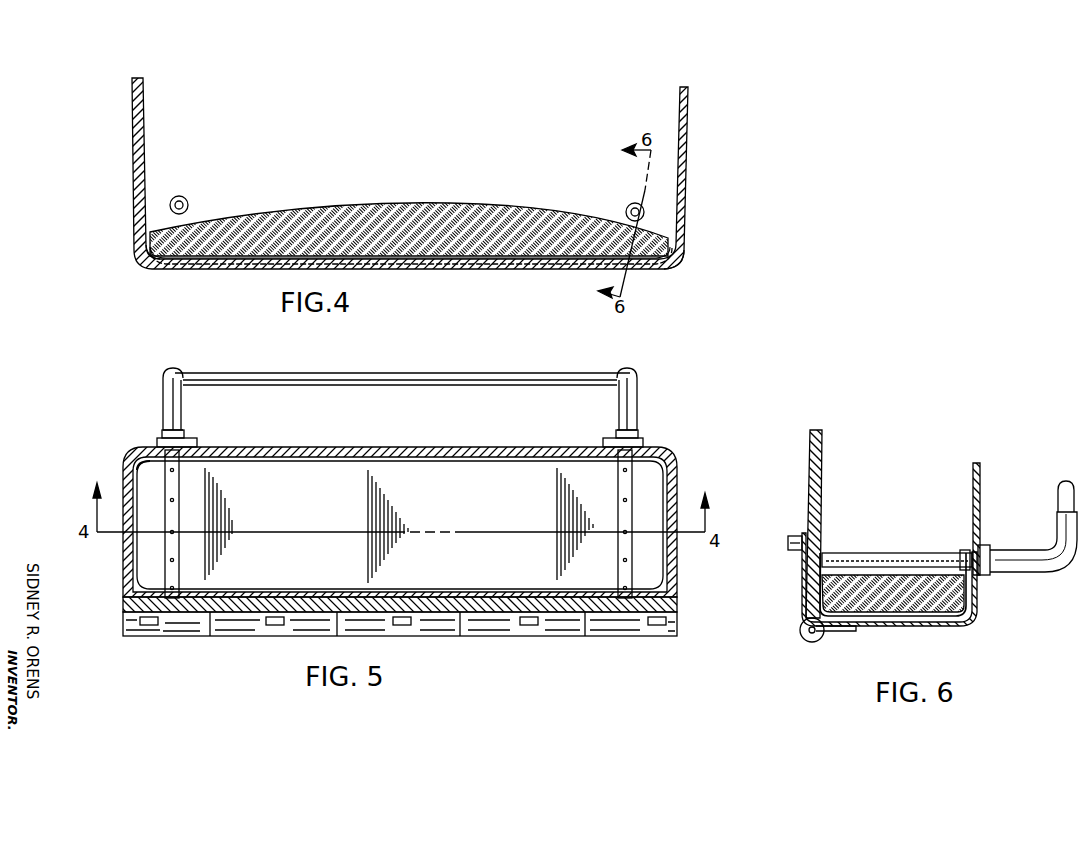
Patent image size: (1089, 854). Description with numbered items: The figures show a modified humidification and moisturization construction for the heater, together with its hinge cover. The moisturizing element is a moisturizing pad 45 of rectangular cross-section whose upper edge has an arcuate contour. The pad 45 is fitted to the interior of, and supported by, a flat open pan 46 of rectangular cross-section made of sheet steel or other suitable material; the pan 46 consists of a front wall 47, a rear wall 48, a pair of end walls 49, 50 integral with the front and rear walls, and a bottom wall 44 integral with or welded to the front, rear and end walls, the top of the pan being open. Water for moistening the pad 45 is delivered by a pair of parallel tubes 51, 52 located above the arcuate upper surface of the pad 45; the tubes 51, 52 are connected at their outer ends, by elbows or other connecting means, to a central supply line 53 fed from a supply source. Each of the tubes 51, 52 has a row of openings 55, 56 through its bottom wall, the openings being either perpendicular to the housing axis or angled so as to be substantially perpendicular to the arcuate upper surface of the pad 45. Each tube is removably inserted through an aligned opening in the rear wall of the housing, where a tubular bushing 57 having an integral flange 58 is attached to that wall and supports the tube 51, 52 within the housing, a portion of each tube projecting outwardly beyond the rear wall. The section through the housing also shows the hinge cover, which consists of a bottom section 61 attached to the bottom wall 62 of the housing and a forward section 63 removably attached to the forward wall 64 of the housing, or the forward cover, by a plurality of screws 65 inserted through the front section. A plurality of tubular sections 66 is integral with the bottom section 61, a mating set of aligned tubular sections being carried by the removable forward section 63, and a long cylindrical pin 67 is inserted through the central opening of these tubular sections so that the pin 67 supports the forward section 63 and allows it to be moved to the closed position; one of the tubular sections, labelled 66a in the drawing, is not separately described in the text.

In FIG. 4, the bottom wall 44 is at (458, 263).
In FIG. 4, the moisturizing pad 45 is at (532, 202).
In FIG. 4, the flat open pan 46 is at (690, 222).
In FIG. 5, the front wall 47 is at (248, 598).
In FIG. 5, the rear wall 48 is at (333, 456).
In FIG. 4, the end wall 49 is at (138, 247).
In FIG. 4, the end wall 50 is at (688, 256).
In FIG. 4, the tube 51 is at (184, 196).
In FIG. 5, the tube 51 is at (180, 472).
In FIG. 4, the tube 52 is at (628, 205).
In FIG. 5, the tube 52 is at (620, 518).
In FIG. 5, the central supply line 53 is at (400, 378).
In FIG. 5, the openings 55 is at (170, 580).
In FIG. 5, the openings 56 is at (632, 558).
In FIG. 6, the tubular bushing 57 is at (985, 548).
In FIG. 6, the flange 58 is at (982, 545).
In FIG. 6, the bottom section 61 is at (836, 630).
In FIG. 6, the bottom wall 62 is at (918, 618).
In FIG. 6, the forward section 63 is at (800, 582).
In FIG. 6, the forward wall 64 is at (810, 480).
In FIG. 6, the screws 65 is at (793, 534).
In FIG. 5, the tubular sections 66 is at (398, 654).
In FIG. 5, the slot 66a is at (236, 632).
In FIG. 5, the cylindrical pin 67 is at (470, 632).
In FIG. 6, the cylindrical pin 67 is at (805, 640).